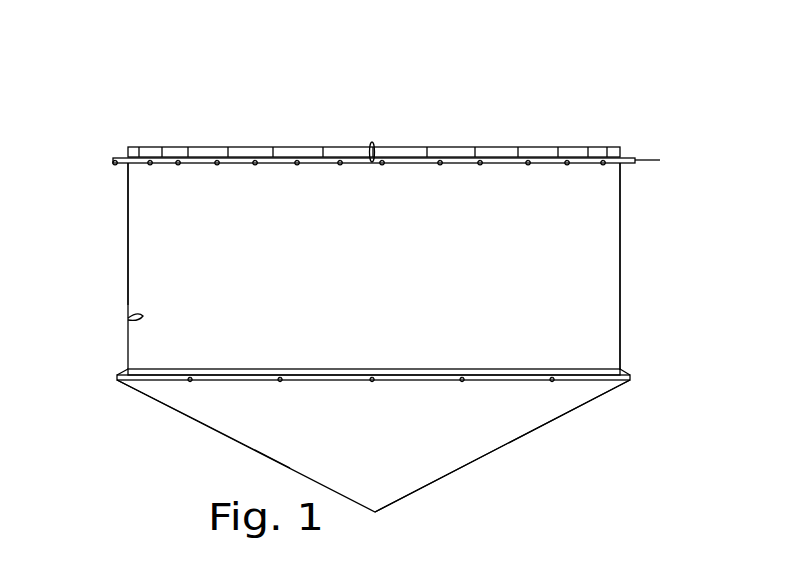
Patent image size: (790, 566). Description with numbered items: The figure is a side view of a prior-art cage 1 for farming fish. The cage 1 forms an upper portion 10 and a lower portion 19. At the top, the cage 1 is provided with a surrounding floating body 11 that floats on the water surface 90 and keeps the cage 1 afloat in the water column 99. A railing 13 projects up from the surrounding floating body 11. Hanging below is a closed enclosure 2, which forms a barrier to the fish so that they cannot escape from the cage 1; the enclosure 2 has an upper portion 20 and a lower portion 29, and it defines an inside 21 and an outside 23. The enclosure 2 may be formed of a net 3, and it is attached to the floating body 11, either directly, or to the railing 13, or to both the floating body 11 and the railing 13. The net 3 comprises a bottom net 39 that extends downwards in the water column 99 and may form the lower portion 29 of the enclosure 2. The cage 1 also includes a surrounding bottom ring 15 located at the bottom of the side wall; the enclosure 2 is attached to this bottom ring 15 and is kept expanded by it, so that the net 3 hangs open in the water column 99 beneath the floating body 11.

The cage 1 is at (226, 98).
The enclosure 2 is at (210, 249).
The net 3 is at (560, 246).
The upper portion 10 is at (185, 197).
The floating body 11 is at (150, 163).
The railing 13 is at (620, 147).
The bottom ring 15 is at (125, 378).
The lower portion 19 is at (286, 435).
The upper portion 20 is at (250, 192).
The inside 21 is at (128, 319).
The outside 23 is at (128, 290).
The lower portion 29 is at (320, 447).
The bottom net 39 is at (205, 420).
The water surface 90 is at (113, 161).
The water column 99 is at (514, 504).